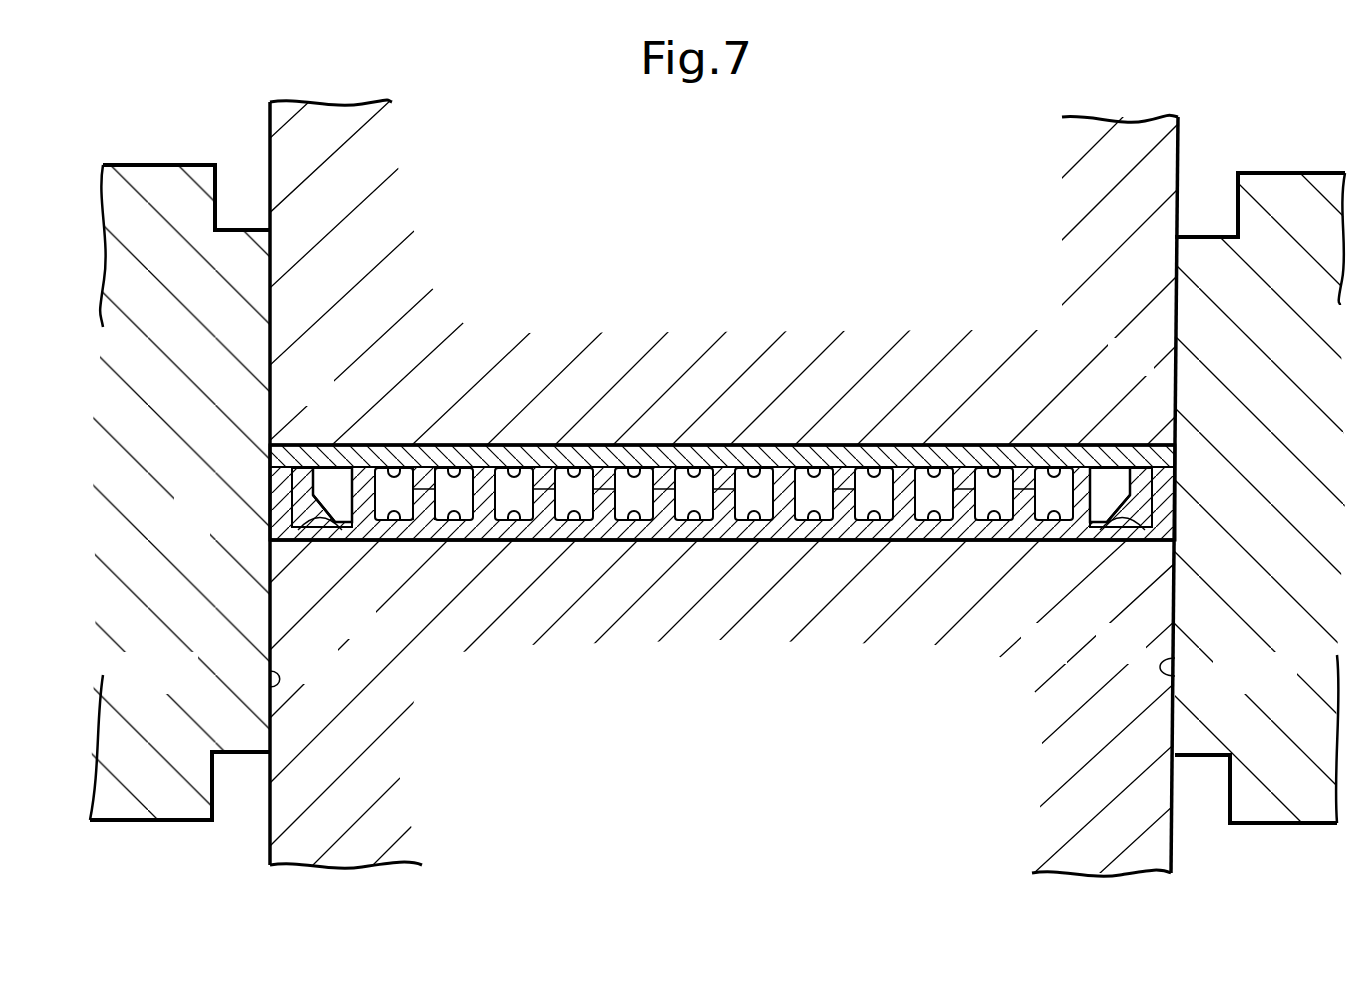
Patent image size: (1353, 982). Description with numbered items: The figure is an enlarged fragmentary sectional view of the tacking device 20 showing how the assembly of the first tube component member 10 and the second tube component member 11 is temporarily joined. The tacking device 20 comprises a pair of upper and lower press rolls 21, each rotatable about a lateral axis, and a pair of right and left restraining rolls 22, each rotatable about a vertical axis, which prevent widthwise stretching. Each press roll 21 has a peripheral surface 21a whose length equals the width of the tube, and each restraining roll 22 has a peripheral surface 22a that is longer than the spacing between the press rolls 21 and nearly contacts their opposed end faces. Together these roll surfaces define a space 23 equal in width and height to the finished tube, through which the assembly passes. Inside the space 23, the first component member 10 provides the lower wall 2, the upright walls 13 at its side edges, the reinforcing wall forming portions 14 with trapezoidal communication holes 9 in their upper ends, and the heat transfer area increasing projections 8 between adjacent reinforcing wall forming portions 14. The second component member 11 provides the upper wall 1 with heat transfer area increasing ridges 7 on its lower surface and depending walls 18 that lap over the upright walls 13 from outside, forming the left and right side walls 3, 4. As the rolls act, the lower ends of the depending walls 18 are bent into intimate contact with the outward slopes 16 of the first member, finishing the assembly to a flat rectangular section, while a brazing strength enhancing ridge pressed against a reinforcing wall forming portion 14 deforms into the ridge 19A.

The upper wall 1 is at (760, 447).
The lower wall 2 is at (700, 535).
The left side wall 3 is at (282, 500).
The right side wall 4 is at (1167, 505).
The heat transfer area increasing ridge 7 is at (500, 470).
The heat transfer area increasing projections 8 is at (406, 512).
The communication holes 9 is at (690, 470).
The first tube component member 10 is at (752, 543).
The second tube component member 11 is at (590, 468).
The upright walls 13 is at (306, 472).
The reinforcing wall forming portions 14 is at (508, 515).
The outward slope 16 is at (325, 527).
The depending walls 18 is at (284, 517).
The deformed ridge 19A is at (815, 455).
The tacking device 20 is at (1222, 168).
The press rolls 21 is at (1150, 138).
The peripheral surface of press roll 21a is at (921, 446).
The restraining rolls 22 is at (163, 790).
The peripheral surface of restraining roll 22a is at (268, 686).
The space 23 is at (836, 528).